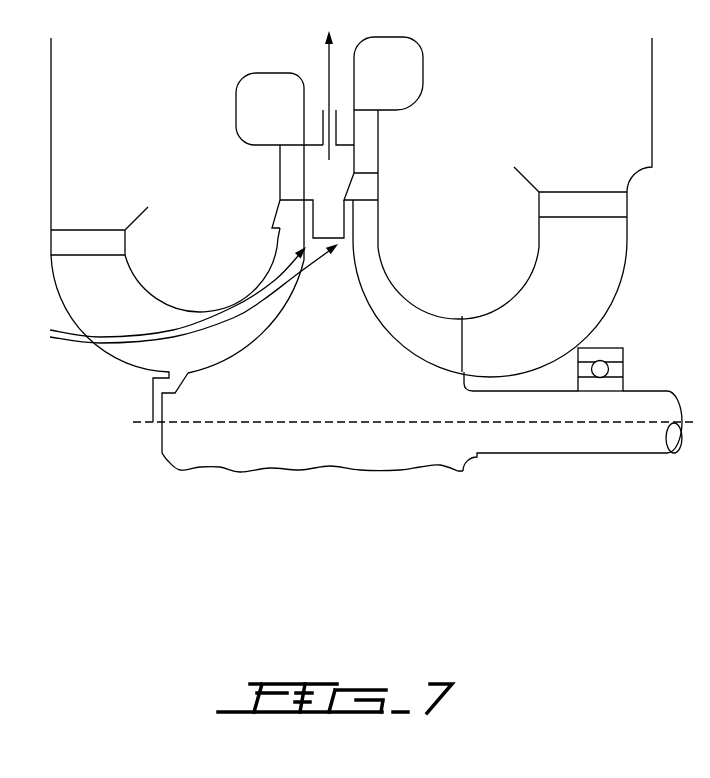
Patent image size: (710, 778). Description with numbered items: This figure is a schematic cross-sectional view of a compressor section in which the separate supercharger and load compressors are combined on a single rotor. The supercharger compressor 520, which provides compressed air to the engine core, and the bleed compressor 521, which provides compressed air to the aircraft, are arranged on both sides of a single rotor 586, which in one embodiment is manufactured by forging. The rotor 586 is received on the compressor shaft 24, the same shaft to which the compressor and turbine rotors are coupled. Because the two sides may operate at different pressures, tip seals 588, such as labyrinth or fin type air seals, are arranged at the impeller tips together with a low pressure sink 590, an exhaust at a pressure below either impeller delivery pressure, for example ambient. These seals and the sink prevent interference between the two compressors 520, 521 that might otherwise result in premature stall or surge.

The compressor shaft 24 is at (662, 403).
The supercharger compressor 520 is at (513, 350).
The bleed compressor 521 is at (215, 350).
The rotor 586 is at (352, 395).
The tip seals 588 is at (175, 297).
The low pressure sink 590 is at (327, 112).